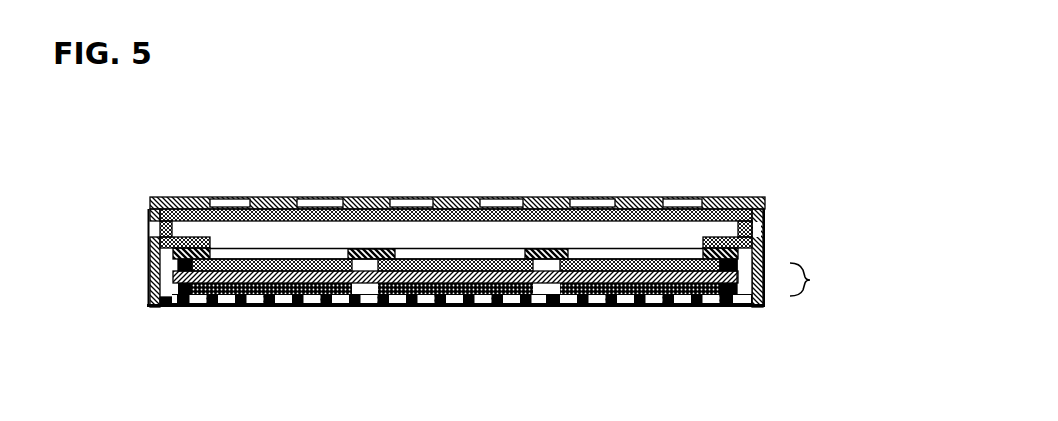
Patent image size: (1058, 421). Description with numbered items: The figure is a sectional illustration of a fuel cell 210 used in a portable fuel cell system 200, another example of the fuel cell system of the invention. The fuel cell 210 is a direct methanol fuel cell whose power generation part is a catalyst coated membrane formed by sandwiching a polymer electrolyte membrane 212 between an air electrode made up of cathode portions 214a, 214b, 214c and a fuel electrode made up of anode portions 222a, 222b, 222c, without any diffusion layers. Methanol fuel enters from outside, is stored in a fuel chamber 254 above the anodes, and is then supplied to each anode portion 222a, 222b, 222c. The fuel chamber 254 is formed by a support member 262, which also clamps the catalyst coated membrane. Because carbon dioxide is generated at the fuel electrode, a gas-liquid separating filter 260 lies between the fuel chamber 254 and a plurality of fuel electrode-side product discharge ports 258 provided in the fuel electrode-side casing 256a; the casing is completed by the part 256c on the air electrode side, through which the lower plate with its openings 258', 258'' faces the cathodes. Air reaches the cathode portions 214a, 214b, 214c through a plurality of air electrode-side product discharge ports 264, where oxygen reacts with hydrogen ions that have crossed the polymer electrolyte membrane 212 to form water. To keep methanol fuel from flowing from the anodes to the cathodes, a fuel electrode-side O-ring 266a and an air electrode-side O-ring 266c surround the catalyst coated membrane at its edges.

The portable fuel cell system 200 is at (745, 72).
The fuel cell 210 is at (828, 287).
The polymer electrolyte membrane 212 is at (490, 307).
The air electrode (cathode) 214a is at (257, 307).
The air electrode (cathode) 214b is at (427, 307).
The air electrode (cathode) 214c is at (592, 307).
The fuel electrode (anode) 222a is at (268, 265).
The fuel electrode (anode) 222b is at (482, 265).
The fuel electrode (anode) 222c is at (640, 265).
The fuel chamber 254 is at (547, 240).
The fuel electrode (anode)-side casing 256a is at (178, 197).
The lower frame member 256c is at (153, 307).
The fuel electrode (anode)-side product discharge ports 258 is at (457, 168).
The lower plate (left) 258' is at (298, 358).
The lower plate (right) 258'' is at (607, 337).
The gas-liquid separating filter 260 is at (687, 215).
The support member 262 is at (365, 252).
The air electrode (cathode)-side product discharge ports 264 is at (338, 307).
The fuel electrode (anode)-side O-ring 266a is at (737, 200).
The air electrode (cathode)-side O-ring 266c is at (200, 307).